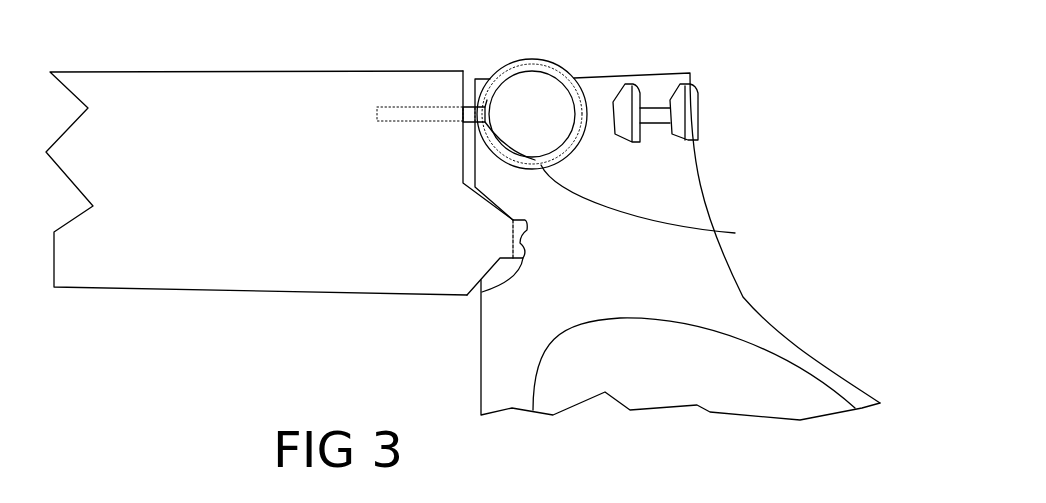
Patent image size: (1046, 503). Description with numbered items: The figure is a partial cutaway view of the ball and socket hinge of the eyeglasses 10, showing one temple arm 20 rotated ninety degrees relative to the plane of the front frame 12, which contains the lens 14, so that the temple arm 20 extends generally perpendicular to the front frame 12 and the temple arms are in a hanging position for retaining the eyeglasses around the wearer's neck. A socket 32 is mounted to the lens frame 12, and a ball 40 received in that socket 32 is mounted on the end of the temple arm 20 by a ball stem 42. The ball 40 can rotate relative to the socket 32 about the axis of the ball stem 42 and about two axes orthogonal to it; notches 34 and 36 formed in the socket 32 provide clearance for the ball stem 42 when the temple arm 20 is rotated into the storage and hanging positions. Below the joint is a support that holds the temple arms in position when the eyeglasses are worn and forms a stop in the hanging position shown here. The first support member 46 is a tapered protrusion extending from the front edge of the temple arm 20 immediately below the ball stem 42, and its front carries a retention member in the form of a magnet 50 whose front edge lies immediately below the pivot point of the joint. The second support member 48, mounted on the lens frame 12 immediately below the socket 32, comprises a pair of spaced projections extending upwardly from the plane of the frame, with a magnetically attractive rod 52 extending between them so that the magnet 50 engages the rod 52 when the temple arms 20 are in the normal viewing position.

The eyeglasses 10 is at (266, 336).
The front frame 12 is at (500, 352).
The lens 14 is at (627, 380).
The temple arm 20 is at (162, 265).
The socket 32 is at (568, 92).
The notch 34 is at (720, 232).
The notch 36 is at (487, 100).
The ball 40 is at (565, 127).
The ball stem 42 is at (425, 115).
The first support member 46 is at (495, 240).
The second support member 48 is at (628, 143).
The magnet 50 is at (481, 283).
The magnetically attractive rod 52 is at (672, 113).